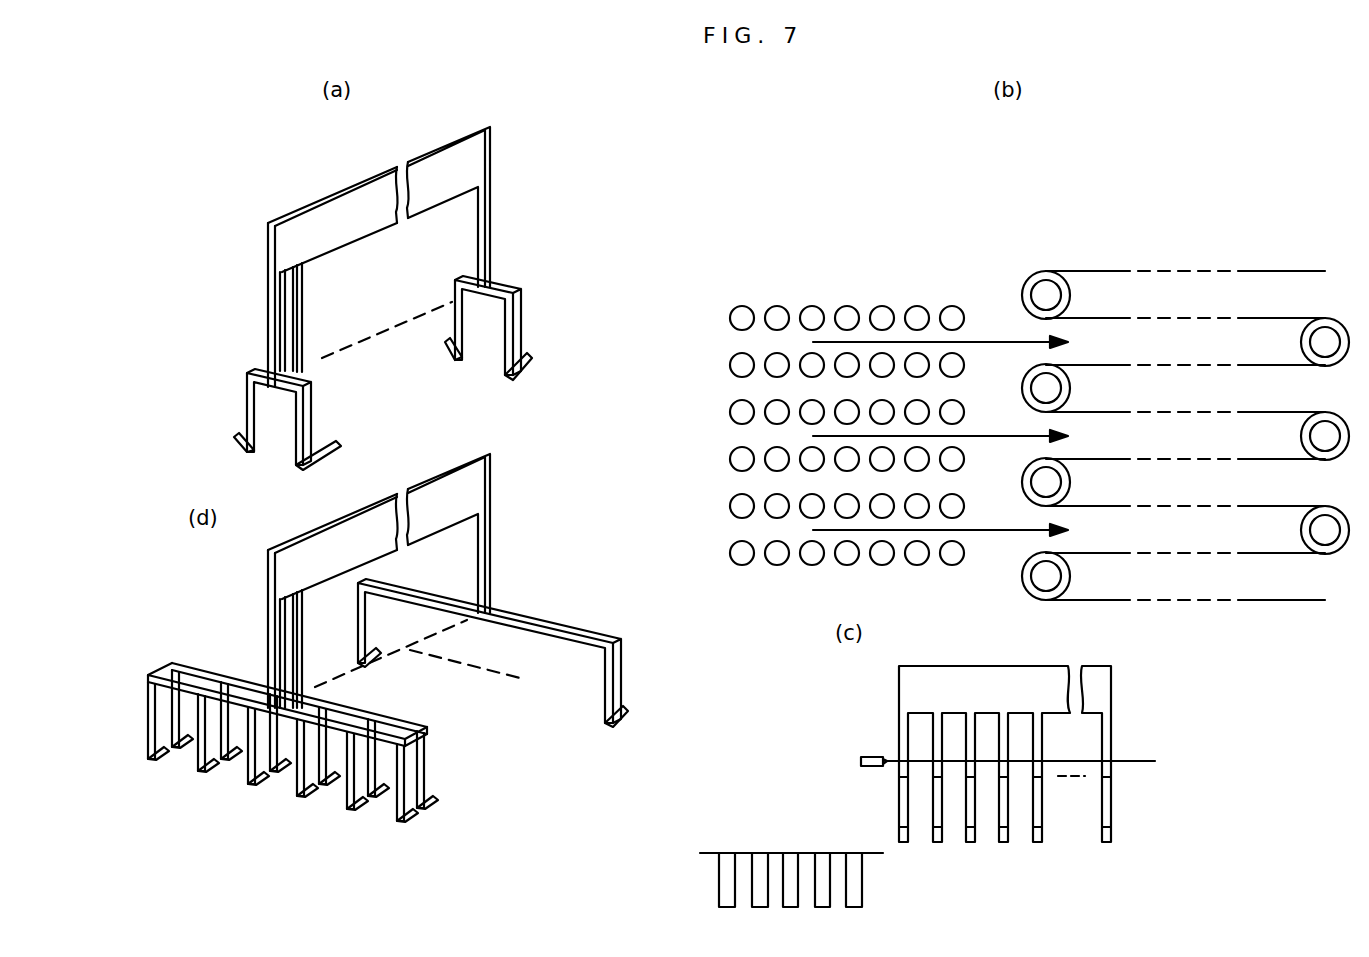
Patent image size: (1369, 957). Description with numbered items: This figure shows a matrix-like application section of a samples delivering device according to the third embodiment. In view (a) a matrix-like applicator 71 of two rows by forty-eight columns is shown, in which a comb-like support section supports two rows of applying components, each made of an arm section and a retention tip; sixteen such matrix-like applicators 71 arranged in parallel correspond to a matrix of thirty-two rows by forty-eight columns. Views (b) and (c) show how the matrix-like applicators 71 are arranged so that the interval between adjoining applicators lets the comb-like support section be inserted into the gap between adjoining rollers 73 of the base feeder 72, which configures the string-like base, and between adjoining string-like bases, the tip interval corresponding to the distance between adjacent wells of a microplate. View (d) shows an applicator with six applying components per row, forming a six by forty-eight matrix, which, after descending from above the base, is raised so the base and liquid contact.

The matrix-like applicator 71 is at (310, 157).
The base feeder 72 is at (1133, 189).
The roller 73 is at (1045, 287).